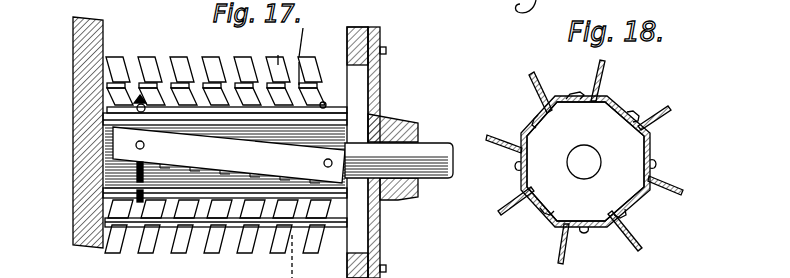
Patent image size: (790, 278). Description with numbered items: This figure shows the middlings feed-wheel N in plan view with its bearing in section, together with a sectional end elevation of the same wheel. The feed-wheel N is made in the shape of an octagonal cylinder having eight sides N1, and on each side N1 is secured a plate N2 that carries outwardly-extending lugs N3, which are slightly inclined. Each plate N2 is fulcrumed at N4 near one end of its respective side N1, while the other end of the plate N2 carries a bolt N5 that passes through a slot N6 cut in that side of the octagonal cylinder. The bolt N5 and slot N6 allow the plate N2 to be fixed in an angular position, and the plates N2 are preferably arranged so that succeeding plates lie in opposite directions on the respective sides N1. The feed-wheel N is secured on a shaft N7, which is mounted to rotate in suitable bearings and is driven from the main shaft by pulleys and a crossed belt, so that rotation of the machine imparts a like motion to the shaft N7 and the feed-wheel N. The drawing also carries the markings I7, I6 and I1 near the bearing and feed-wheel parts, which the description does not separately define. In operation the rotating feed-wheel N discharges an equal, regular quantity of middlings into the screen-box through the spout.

In FIG. 17, the wall / support frame I7 is at (80, 62).
In FIG. 17, the middlings feed-wheel N is at (193, 134).
In FIG. 18, the middlings feed-wheel N is at (588, 145).
In FIG. 17, the bolt N5 is at (117, 107).
In FIG. 17, the lugs N3 is at (248, 63).
In FIG. 18, the lugs N3 is at (498, 136).
In FIG. 17, the fin blocks I6 is at (216, 67).
In FIG. 17, the plate N2 is at (225, 187).
In FIG. 18, the plate N2 is at (518, 170).
In FIG. 17, the slot N6 is at (143, 100).
In FIG. 17, the flange plate I1 is at (375, 34).
In FIG. 17, the shaft N7 is at (427, 150).
In FIG. 17, the fulcrum N4 is at (326, 105).
In FIG. 18, the fulcrum N4 is at (642, 160).
In FIG. 18, the sides N1 is at (528, 148).